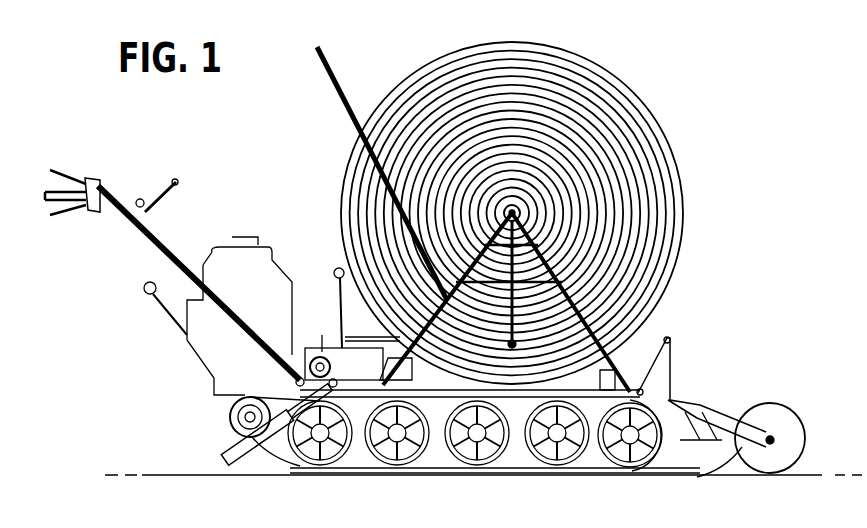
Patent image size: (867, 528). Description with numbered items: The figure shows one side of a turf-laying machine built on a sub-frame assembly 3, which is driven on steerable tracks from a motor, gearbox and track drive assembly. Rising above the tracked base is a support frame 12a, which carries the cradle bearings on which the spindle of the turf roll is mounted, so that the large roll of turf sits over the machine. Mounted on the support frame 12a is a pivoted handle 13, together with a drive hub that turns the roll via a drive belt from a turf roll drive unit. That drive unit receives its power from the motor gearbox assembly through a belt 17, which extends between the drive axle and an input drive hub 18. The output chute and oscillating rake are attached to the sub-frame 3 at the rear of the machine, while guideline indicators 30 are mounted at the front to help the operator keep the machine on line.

The sub-frame assembly 3 is at (428, 392).
The support frame 12a is at (467, 250).
The pivoted handle 13 is at (330, 62).
The belt 17 is at (215, 378).
The input drive hub 18 is at (322, 335).
The guideline indicators 30 is at (283, 423).